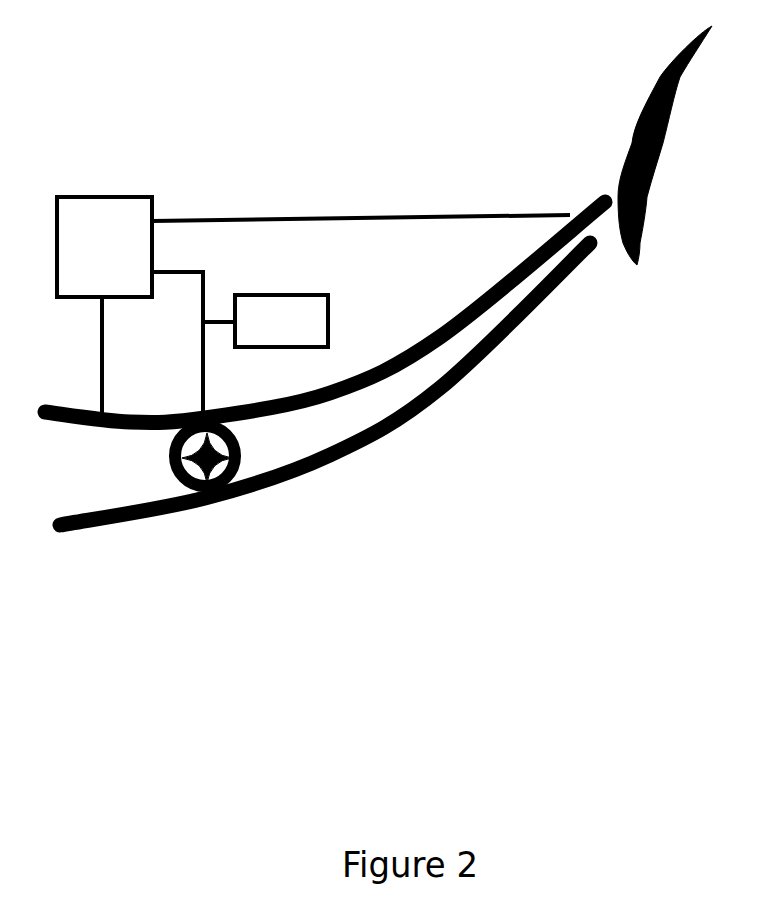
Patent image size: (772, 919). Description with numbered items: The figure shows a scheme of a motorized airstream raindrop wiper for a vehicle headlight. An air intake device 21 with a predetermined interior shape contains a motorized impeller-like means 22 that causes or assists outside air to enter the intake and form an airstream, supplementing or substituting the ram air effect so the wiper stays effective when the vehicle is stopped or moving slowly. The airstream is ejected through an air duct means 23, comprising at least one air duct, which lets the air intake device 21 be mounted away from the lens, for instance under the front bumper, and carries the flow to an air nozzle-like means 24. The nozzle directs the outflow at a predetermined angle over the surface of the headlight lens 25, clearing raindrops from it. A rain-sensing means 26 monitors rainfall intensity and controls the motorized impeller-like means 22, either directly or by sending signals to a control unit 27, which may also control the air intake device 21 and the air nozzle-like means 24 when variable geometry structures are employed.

The air intake device 21 is at (97, 530).
The motorized impeller-like means 22 is at (210, 477).
The air duct means 23 is at (488, 325).
The air nozzle-like means 24 is at (597, 228).
The headlight lens 25 is at (643, 100).
The rain-sensing means 26 is at (322, 327).
The control unit 27 is at (82, 225).